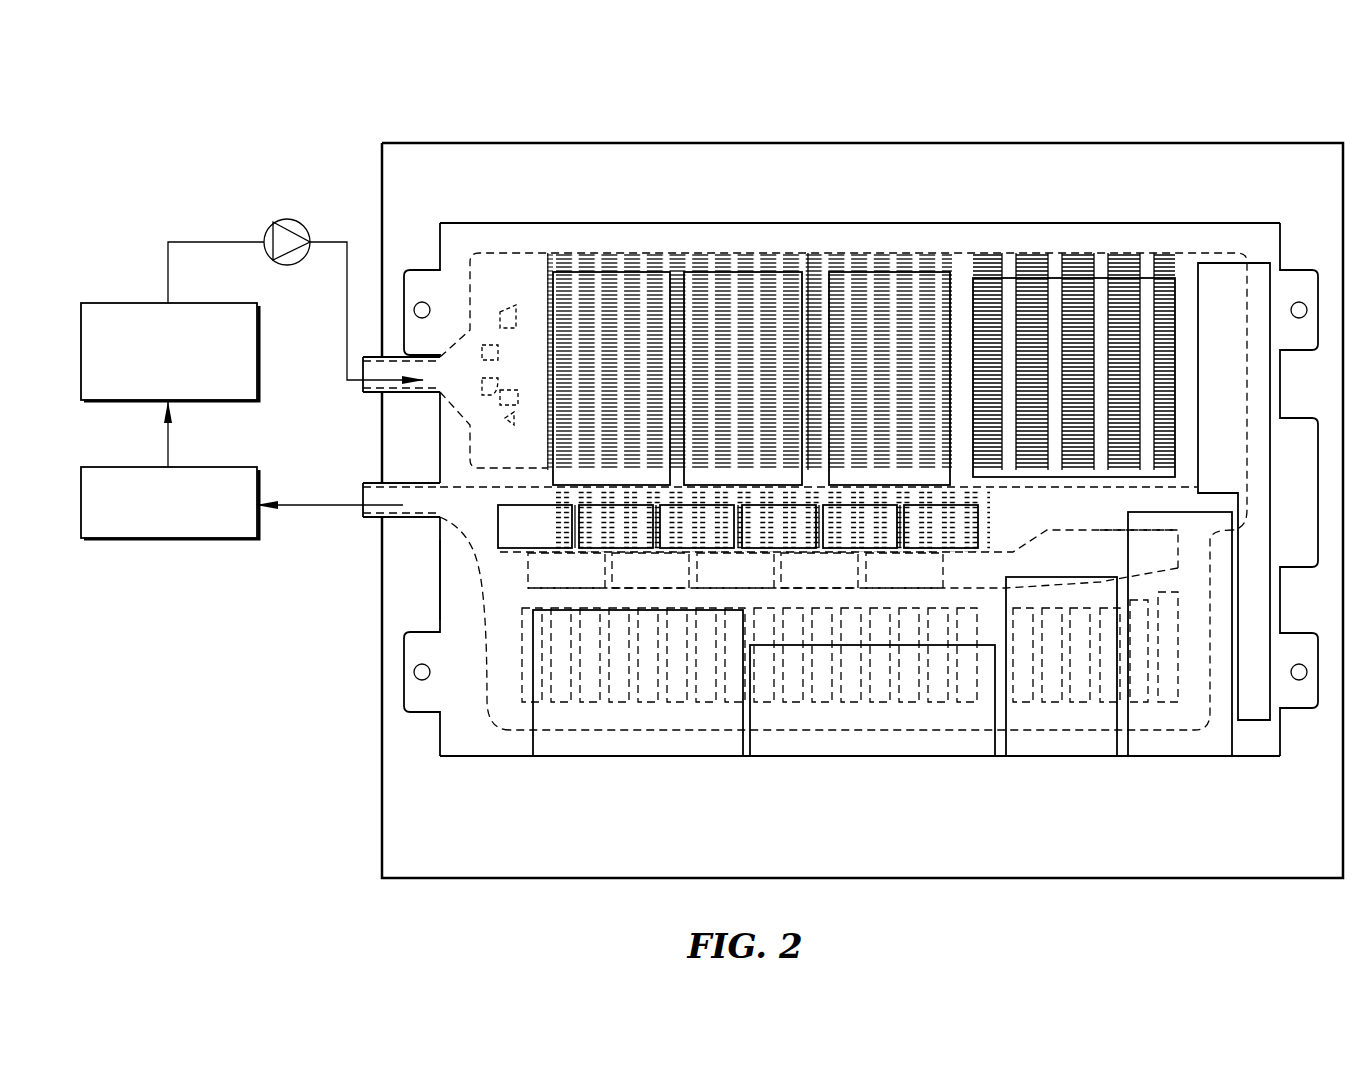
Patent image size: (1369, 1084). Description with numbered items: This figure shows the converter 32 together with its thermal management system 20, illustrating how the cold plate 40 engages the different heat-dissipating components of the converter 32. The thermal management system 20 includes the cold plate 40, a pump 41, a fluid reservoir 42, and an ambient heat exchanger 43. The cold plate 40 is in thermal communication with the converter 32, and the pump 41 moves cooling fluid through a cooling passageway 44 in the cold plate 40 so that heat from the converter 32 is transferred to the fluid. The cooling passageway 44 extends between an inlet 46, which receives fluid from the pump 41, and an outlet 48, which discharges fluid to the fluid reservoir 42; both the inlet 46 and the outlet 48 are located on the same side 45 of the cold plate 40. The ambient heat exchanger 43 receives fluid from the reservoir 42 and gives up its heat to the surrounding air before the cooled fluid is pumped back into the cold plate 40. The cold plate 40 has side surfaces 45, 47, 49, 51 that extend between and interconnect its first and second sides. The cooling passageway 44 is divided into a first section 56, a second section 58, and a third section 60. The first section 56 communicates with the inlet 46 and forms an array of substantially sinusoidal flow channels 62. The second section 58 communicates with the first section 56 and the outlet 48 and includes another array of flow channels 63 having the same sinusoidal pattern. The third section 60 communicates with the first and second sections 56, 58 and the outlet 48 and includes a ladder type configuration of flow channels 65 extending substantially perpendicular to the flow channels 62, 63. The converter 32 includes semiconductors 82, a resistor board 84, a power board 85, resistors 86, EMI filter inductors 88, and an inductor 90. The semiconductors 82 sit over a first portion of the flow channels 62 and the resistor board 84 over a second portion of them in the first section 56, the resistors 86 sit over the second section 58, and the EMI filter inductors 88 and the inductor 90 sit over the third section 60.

The thermal management system 20 is at (282, 140).
The converter 32 is at (1152, 135).
The cold plate 40 is at (455, 205).
The pump 41 is at (272, 222).
The fluid reservoir 42 is at (108, 467).
The ambient heat exchanger 43 is at (110, 303).
The cooling passageway 44 is at (640, 245).
The side surface 45 is at (440, 582).
The inlet 46 is at (362, 388).
The side surface 47 is at (845, 222).
The outlet 48 is at (362, 496).
The side surface 49 is at (1280, 606).
The side surface 51 is at (897, 757).
The first section 56 is at (725, 250).
The second section 58 is at (1197, 503).
The third section 60 is at (496, 725).
The flow channel 62 is at (817, 275).
The flow channel 63 is at (1005, 500).
The flow channel 65 is at (890, 602).
The semiconductor 82 is at (598, 377).
The resistor board 84 is at (1065, 377).
The power board 85 is at (1211, 418).
The resistor 86 is at (523, 541).
The EMI filter inductor 88 is at (861, 731).
The inductor 90 is at (626, 731).